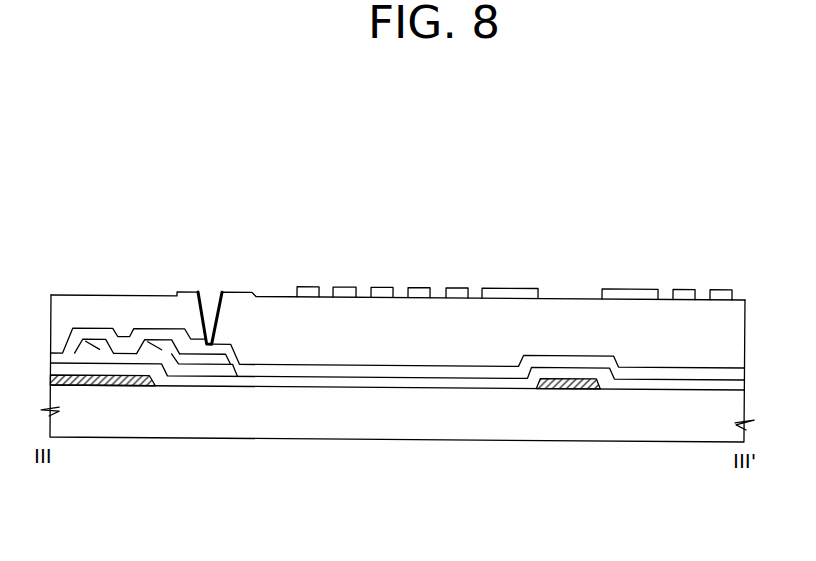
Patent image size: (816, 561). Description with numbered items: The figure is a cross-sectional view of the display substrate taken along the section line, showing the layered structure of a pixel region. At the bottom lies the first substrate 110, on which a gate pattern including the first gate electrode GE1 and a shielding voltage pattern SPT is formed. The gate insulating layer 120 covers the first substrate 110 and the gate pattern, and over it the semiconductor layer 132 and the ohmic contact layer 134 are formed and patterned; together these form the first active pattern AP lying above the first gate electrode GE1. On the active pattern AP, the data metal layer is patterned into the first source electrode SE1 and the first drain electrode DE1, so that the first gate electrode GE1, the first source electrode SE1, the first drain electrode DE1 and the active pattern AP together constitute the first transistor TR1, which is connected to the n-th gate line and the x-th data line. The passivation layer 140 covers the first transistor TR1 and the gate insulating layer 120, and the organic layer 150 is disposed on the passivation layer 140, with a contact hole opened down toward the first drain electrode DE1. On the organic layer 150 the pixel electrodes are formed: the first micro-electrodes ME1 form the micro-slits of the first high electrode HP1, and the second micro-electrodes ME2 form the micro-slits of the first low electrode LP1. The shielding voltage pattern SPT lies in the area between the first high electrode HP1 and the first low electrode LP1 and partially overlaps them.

The first substrate 110 is at (382, 413).
The gate insulating layer 120 is at (425, 379).
The passivation layer 140 is at (468, 369).
The organic layer 150 is at (712, 343).
The first transistor TR1 is at (120, 436).
The first gate electrode GE1 is at (128, 380).
The first source electrode SE1 is at (88, 343).
The first drain electrode DE1 is at (168, 345).
The first active pattern AP is at (203, 443).
The semiconductor layer 132 is at (199, 368).
The ohmic contact layer 134 is at (229, 357).
The shielding voltage pattern SPT is at (577, 384).
The first micro-electrodes ME1 is at (384, 292).
The first high electrode HP1 is at (488, 292).
The first low electrode LP1 is at (614, 293).
The second micro-electrodes ME2 is at (680, 294).